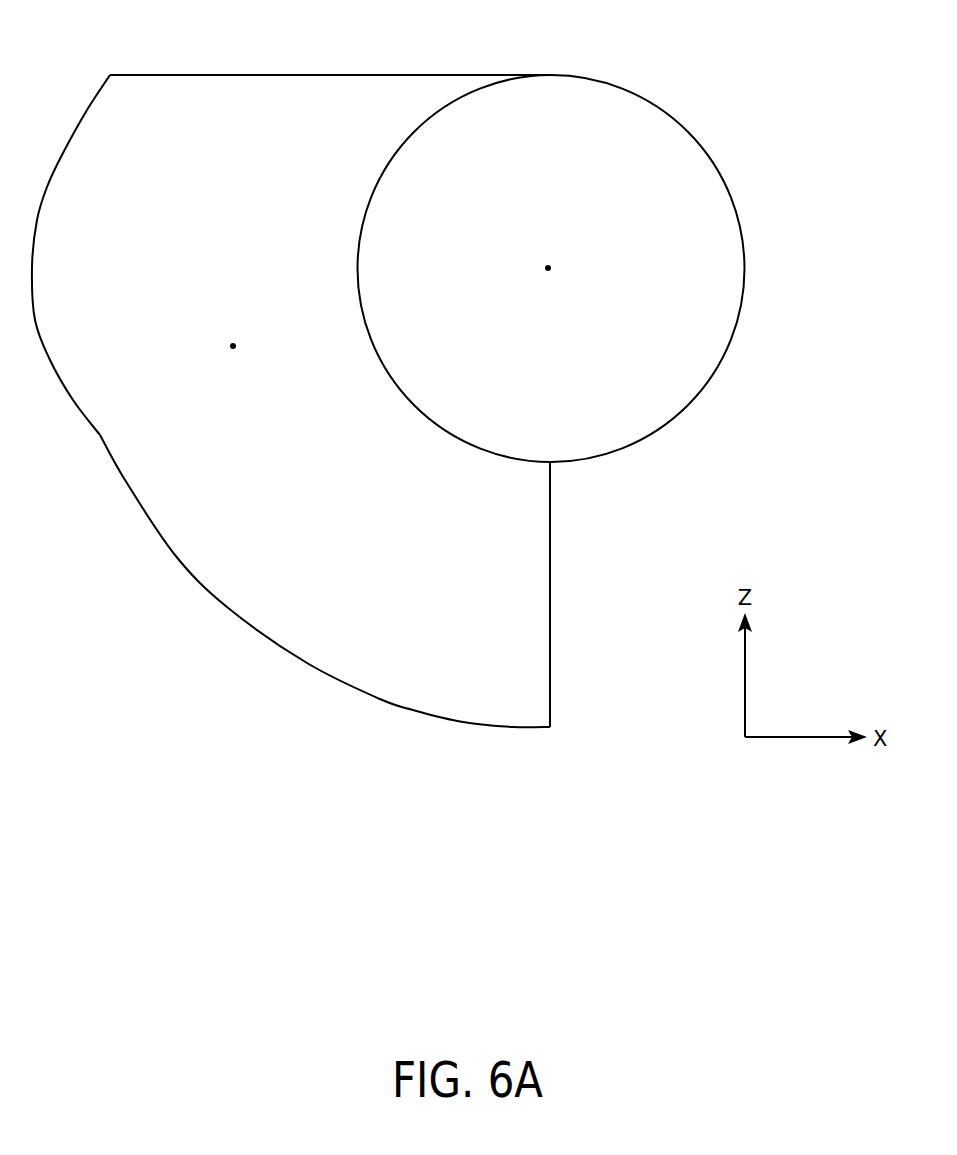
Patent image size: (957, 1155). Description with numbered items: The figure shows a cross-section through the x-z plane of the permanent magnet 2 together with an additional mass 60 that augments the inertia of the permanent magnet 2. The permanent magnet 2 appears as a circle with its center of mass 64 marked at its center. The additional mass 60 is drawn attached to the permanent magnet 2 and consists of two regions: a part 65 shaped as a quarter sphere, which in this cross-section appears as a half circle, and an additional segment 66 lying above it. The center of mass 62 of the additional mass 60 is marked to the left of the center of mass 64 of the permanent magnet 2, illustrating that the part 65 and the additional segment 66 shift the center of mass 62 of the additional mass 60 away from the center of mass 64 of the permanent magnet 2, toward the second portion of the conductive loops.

The permanent magnet 2 is at (668, 113).
The additional mass 60 is at (255, 75).
The center of mass 62 is at (233, 346).
The center of mass 64 is at (548, 268).
The part 65 is at (325, 581).
The additional segment 66 is at (109, 255).